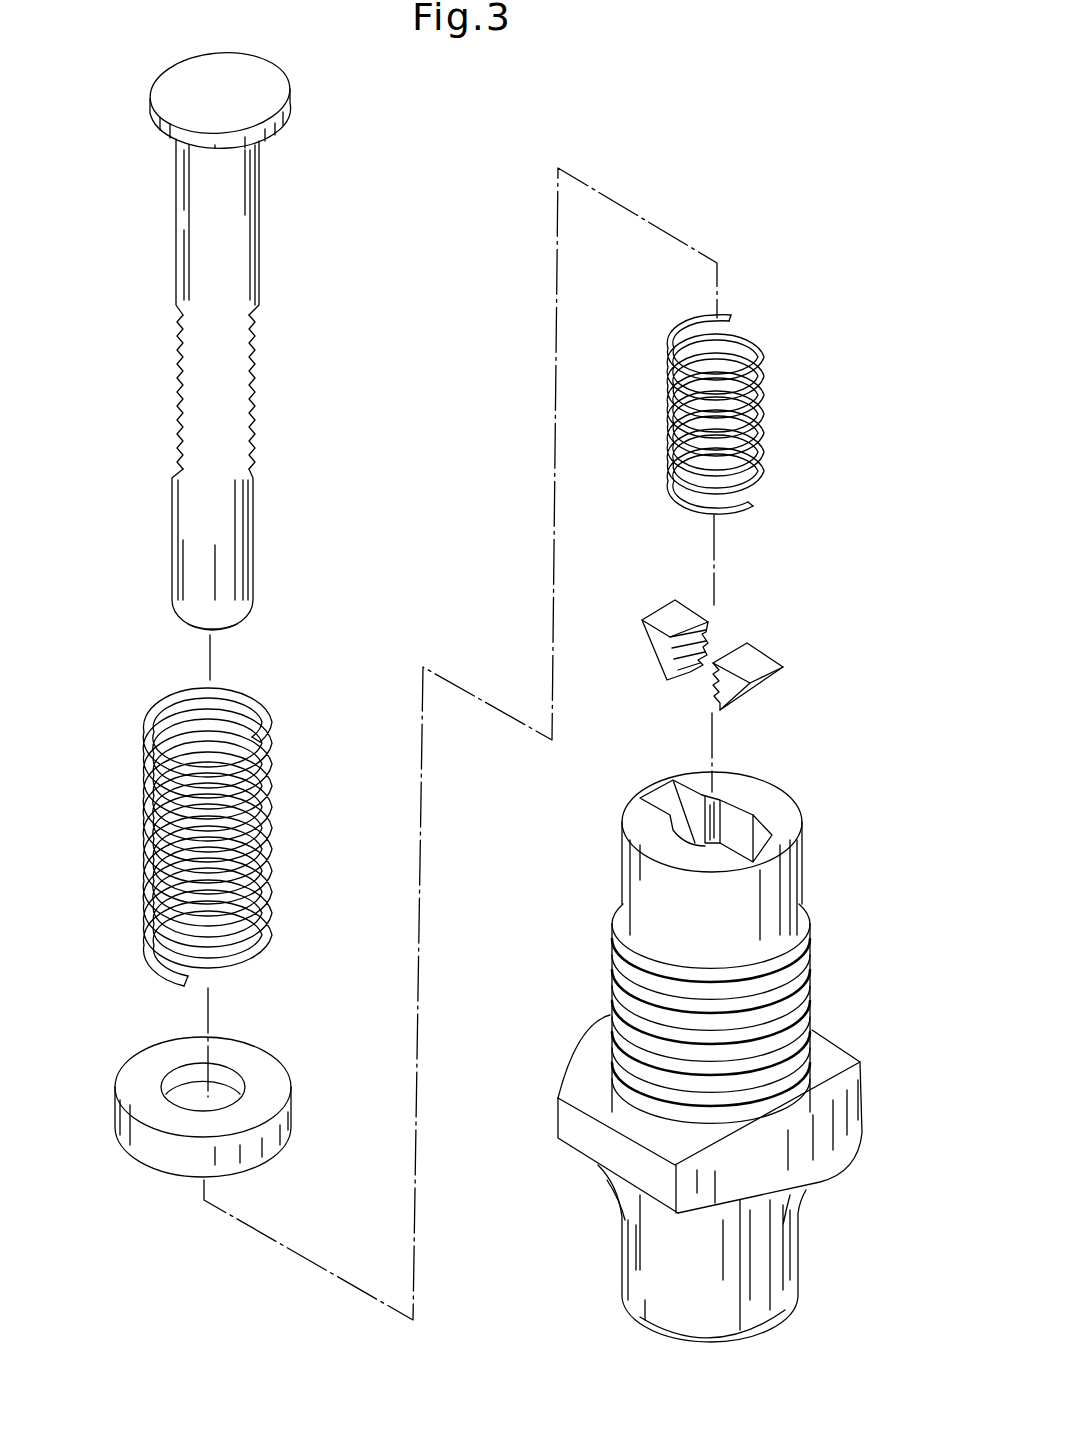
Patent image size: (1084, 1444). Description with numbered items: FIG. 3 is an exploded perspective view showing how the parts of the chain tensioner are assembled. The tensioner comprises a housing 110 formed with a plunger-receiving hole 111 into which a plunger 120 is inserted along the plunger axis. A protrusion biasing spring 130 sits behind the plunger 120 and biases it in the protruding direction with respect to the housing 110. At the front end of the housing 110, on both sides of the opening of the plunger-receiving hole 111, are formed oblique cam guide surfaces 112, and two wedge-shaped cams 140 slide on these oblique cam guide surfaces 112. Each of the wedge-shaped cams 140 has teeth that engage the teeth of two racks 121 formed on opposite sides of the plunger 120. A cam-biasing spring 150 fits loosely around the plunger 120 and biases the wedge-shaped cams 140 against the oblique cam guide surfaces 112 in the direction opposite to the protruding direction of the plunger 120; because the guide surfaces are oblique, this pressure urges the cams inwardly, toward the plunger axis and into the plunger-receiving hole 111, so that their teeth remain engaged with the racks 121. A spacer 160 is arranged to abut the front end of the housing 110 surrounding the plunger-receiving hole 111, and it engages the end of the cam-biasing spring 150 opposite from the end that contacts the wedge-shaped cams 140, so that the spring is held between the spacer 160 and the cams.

The housing 110 is at (738, 1038).
The plunger-receiving hole 111 is at (747, 815).
The oblique cam guide surfaces 112 is at (657, 790).
The plunger 120 is at (251, 338).
The racks 121 is at (178, 388).
The protrusion biasing spring 130 is at (290, 726).
The wedge-shaped cams 140 is at (661, 591).
The cam-biasing spring 150 is at (793, 382).
The spacer 160 is at (287, 1033).